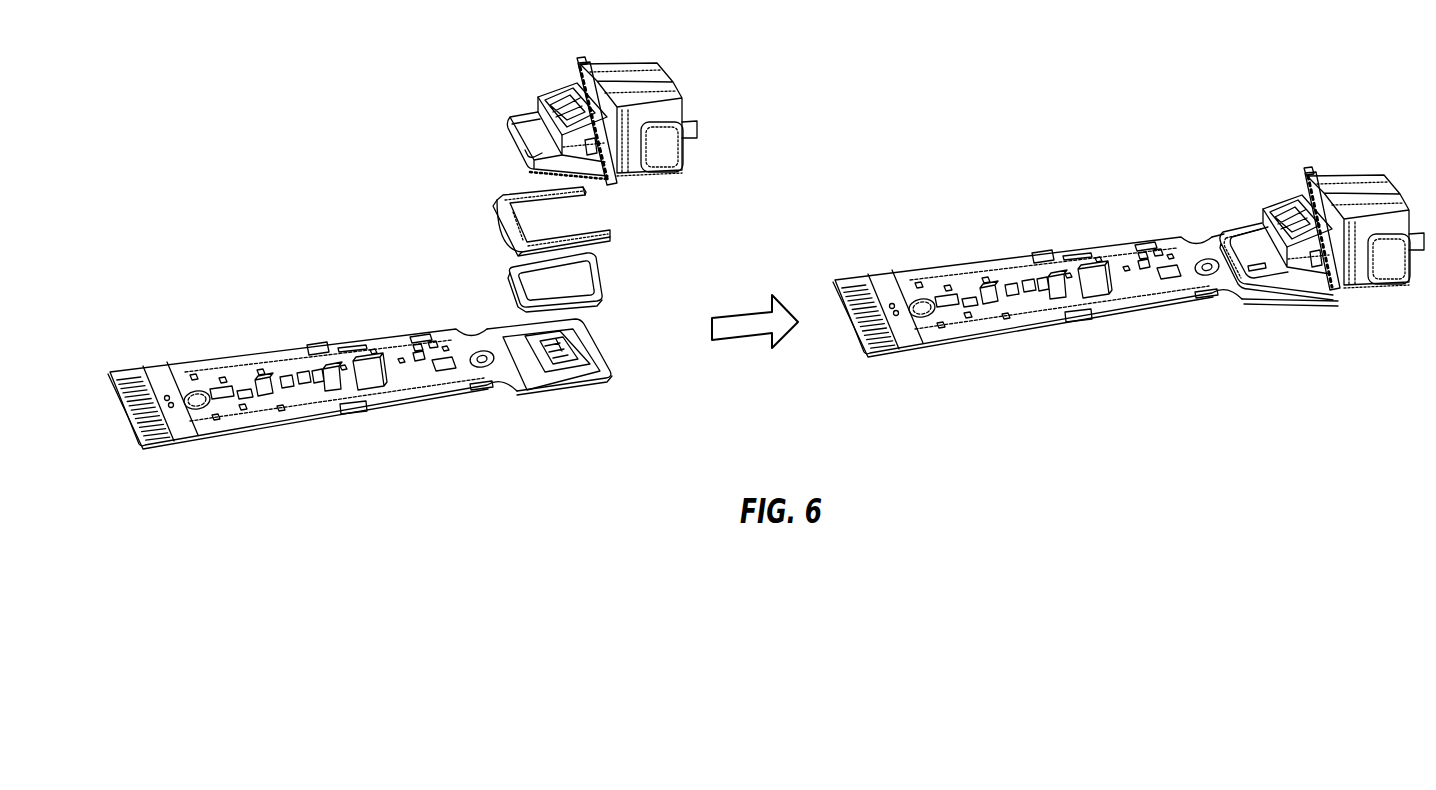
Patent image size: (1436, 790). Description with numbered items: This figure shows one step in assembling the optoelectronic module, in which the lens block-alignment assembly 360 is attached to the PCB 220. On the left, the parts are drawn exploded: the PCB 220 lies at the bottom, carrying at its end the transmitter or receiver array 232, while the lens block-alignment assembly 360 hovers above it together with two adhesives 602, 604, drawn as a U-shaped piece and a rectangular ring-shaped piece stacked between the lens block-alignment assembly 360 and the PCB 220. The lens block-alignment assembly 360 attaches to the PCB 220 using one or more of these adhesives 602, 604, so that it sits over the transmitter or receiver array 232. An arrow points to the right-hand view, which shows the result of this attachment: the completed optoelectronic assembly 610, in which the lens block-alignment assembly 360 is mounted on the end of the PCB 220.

The PCB 220 is at (338, 334).
The transmitter or receiver array 232 is at (568, 343).
The lens block-alignment assembly 360 is at (505, 83).
The adhesive 602 is at (490, 194).
The adhesive 604 is at (505, 266).
The optoelectronic assembly 610 is at (1124, 181).